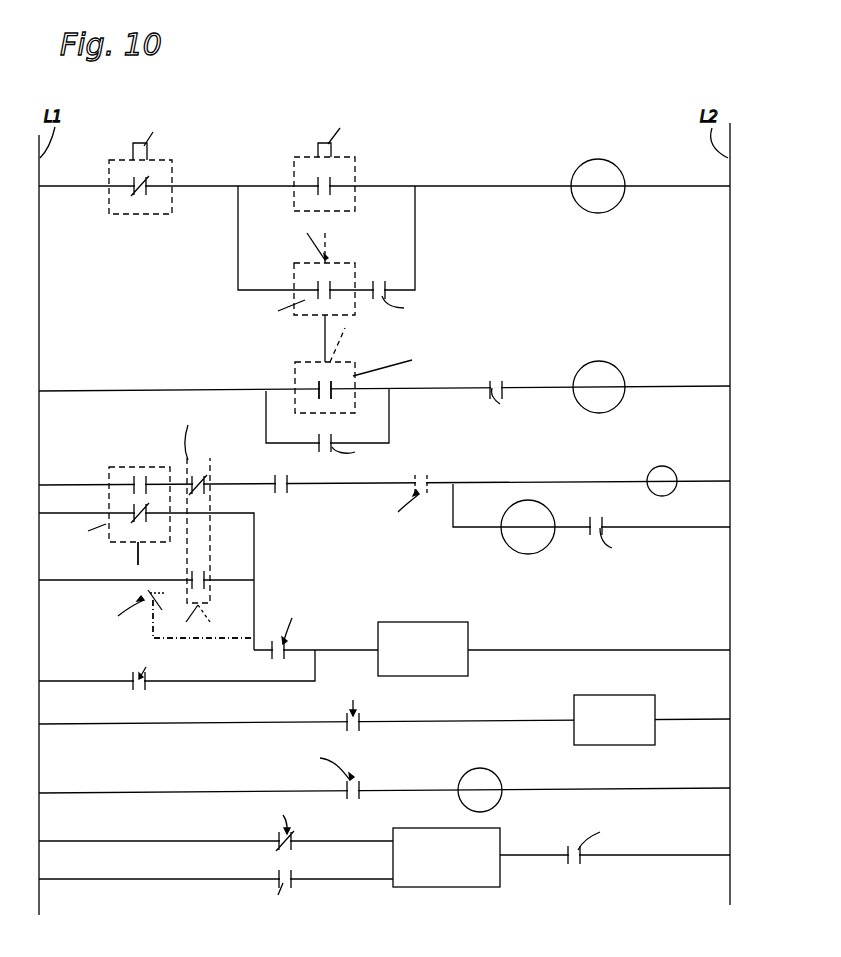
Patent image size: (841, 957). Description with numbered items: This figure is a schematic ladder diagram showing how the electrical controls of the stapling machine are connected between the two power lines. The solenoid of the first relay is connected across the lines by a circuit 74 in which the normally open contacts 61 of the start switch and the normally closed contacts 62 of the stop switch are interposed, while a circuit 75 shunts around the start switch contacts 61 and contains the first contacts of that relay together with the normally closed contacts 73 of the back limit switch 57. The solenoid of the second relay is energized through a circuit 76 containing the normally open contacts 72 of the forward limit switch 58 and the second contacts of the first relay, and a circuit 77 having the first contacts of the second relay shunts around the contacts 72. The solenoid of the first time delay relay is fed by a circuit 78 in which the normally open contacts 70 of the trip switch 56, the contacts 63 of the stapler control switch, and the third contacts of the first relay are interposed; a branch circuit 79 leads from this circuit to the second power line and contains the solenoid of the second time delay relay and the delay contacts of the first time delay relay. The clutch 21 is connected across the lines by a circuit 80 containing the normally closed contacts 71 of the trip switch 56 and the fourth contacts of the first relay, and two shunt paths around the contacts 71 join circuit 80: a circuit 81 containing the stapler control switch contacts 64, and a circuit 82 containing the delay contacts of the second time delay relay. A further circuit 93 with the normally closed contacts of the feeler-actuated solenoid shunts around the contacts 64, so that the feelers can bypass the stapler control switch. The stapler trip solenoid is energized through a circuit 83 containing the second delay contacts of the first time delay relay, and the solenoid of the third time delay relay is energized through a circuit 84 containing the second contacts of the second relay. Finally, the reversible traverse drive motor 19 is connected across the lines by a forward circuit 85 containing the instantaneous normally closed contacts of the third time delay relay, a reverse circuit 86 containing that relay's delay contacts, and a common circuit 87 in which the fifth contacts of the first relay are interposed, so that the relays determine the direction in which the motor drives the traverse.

The reversible traverse drive motor 19 is at (438, 881).
The clutch 21 is at (437, 625).
The trip switch 56 is at (150, 540).
The back limit switch 57 is at (340, 272).
The forward limit switch 58 is at (355, 365).
The normally open contacts of the start switch 61 is at (330, 174).
The normally closed contacts of the stop switch 62 is at (148, 174).
The stapler control switch contacts 63 is at (200, 480).
The stapler control switch contacts 64 is at (196, 578).
The normally open contacts of the trip switch 70 is at (138, 478).
The normally closed contacts of the trip switch 71 is at (135, 518).
The normally open contacts of the forward limit switch 72 is at (320, 380).
The normally closed contacts of the back limit switch 73 is at (328, 298).
The circuit 74 is at (533, 181).
The circuit 75 is at (416, 246).
The circuit 76 is at (658, 385).
The circuit 77 is at (390, 421).
The circuit 78 is at (468, 484).
The branch circuit 79 is at (470, 527).
The circuit 80 is at (583, 646).
The circuit 81 is at (112, 581).
The circuit 82 is at (85, 667).
The circuit 83 is at (510, 712).
The circuit 84 is at (570, 775).
The forward circuit 85 is at (112, 830).
The reverse circuit 86 is at (135, 883).
The common circuit 87 is at (548, 858).
The circuit 93 is at (212, 638).